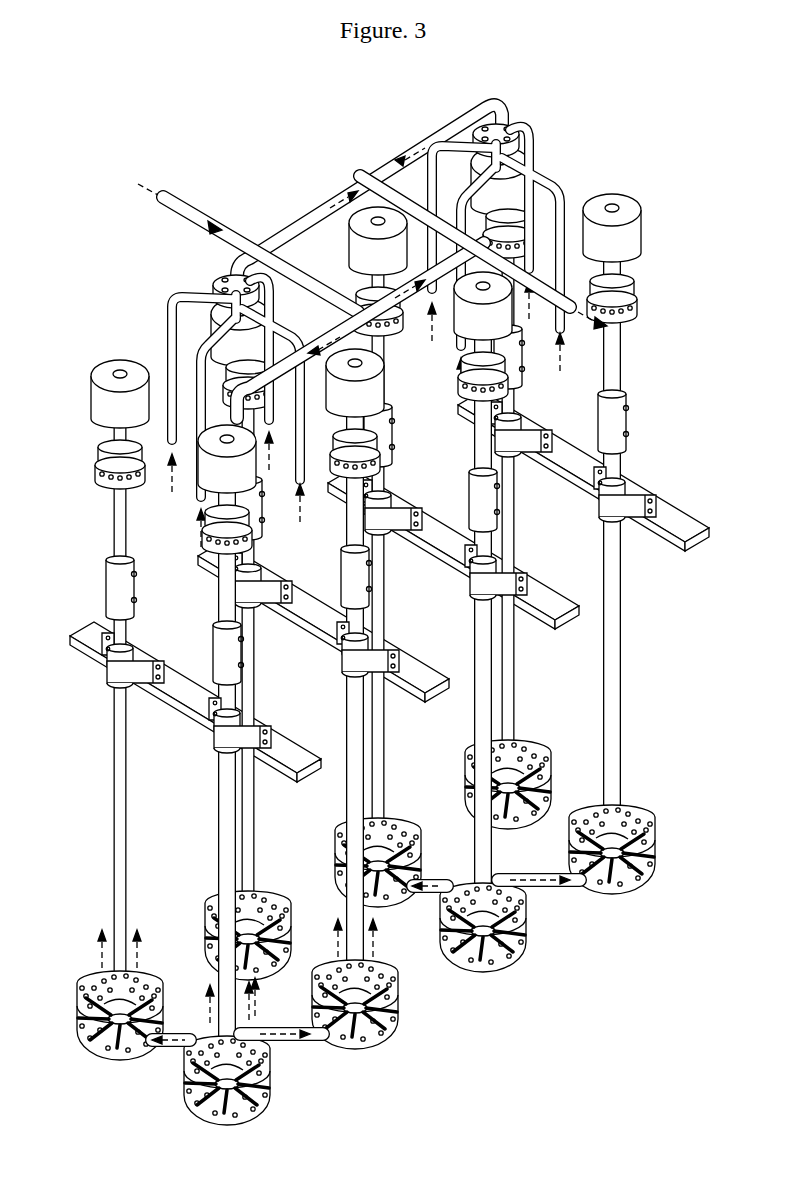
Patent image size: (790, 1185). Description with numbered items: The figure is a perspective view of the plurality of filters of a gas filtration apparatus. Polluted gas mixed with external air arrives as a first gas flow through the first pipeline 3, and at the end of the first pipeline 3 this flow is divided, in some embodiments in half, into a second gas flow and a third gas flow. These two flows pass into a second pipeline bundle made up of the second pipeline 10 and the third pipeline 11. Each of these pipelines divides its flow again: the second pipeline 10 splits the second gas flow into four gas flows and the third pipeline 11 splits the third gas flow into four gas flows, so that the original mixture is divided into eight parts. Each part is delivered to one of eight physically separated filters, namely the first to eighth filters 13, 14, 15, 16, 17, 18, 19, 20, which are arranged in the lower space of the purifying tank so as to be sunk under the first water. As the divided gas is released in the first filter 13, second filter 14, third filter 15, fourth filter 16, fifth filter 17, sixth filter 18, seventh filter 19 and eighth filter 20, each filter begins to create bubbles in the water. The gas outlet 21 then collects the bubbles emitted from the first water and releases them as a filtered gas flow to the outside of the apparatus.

The first pipeline 3 is at (227, 230).
The second pipeline 10 is at (238, 818).
The third pipeline 11 is at (498, 650).
The first filter 13 is at (88, 990).
The second filter 14 is at (233, 1113).
The third filter 15 is at (215, 903).
The fourth filter 16 is at (400, 1032).
The fifth filter 17 is at (392, 815).
The sixth filter 18 is at (487, 957).
The seventh filter 19 is at (527, 763).
The eighth filter 20 is at (648, 822).
The gas outlet 21 is at (540, 288).